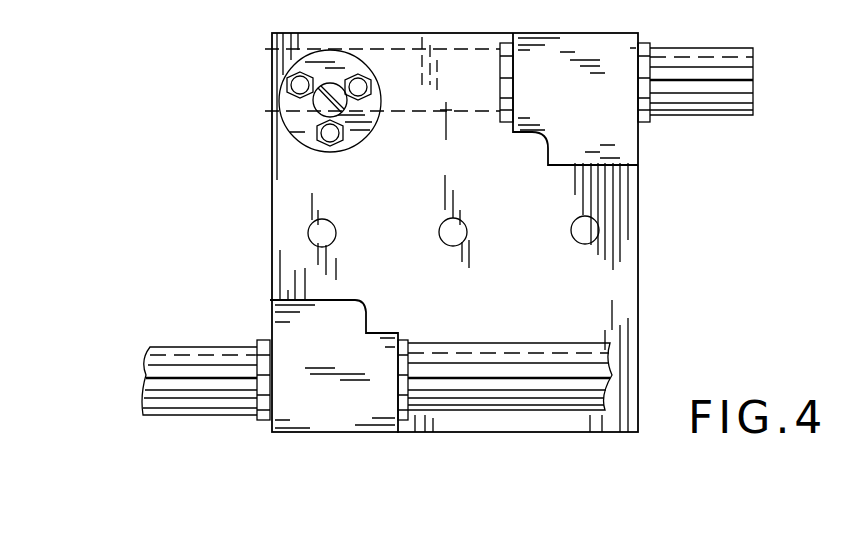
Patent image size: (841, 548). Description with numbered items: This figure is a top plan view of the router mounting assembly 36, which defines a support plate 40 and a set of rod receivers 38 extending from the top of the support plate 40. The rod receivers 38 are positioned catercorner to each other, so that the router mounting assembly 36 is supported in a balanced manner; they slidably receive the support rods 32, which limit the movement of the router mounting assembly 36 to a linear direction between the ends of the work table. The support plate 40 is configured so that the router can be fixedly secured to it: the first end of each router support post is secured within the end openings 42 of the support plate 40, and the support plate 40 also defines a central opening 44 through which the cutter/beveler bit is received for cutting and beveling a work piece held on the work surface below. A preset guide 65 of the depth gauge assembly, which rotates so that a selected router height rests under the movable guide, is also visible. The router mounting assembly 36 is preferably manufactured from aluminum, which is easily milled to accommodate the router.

The support rods 32 is at (730, 73).
The router mounting assembly 36 is at (205, 172).
The rod receivers 38 is at (610, 120).
The support plate 40 is at (474, 300).
The end openings 42 is at (314, 242).
The central opening 44 is at (455, 225).
The preset guide 65 is at (283, 106).